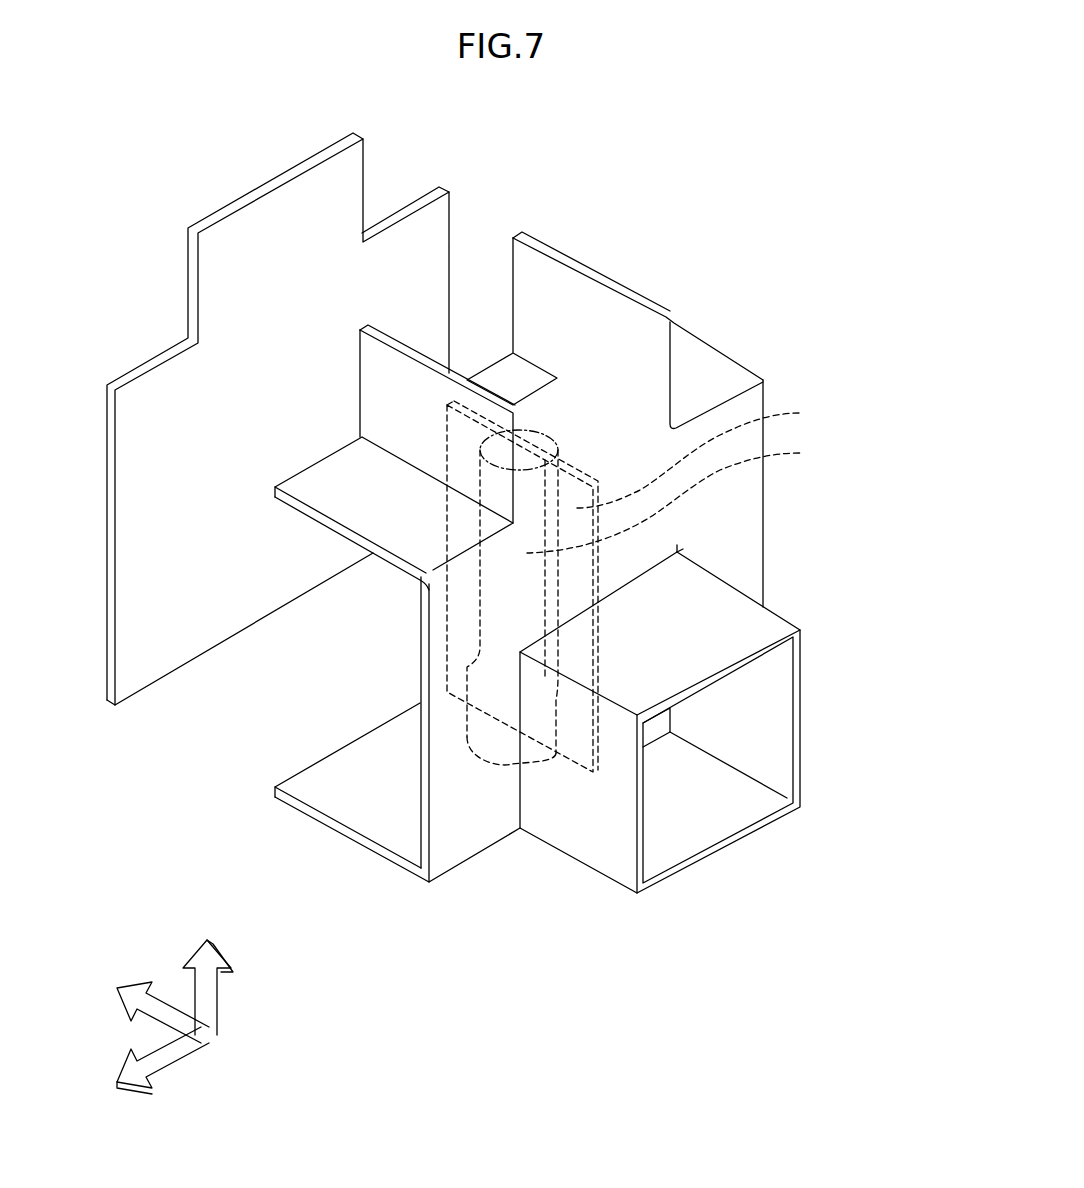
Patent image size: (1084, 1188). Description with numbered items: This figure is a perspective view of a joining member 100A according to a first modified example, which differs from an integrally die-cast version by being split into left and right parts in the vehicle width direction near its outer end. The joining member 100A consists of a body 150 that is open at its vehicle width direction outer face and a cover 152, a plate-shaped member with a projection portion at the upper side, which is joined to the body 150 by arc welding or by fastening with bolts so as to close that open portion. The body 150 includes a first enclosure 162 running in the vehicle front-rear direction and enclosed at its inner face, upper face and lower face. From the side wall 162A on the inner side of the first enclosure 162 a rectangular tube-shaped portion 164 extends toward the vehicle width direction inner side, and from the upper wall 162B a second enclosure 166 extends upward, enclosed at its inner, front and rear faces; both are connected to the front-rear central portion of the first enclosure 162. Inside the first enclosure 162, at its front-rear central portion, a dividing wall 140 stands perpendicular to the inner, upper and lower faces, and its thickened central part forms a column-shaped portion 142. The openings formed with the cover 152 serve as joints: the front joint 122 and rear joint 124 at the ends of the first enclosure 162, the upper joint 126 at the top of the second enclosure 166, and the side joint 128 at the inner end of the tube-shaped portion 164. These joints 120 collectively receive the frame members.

The joining member 100A is at (723, 176).
The plates 120 is at (547, 532).
The front joint 122 is at (355, 798).
The rear joint 124 is at (745, 555).
The upper joint 126 is at (567, 307).
The side joint 128 is at (710, 822).
The dividing wall 140 is at (797, 413).
The column-shaped portion 142 is at (797, 453).
The body 150 is at (646, 296).
The cover 152 is at (270, 179).
The first enclosure 162 is at (407, 523).
The side wall 162A is at (730, 518).
The upper wall 162B is at (338, 495).
The tube-shaped portion 164 is at (723, 623).
The second enclosure 166 is at (375, 383).